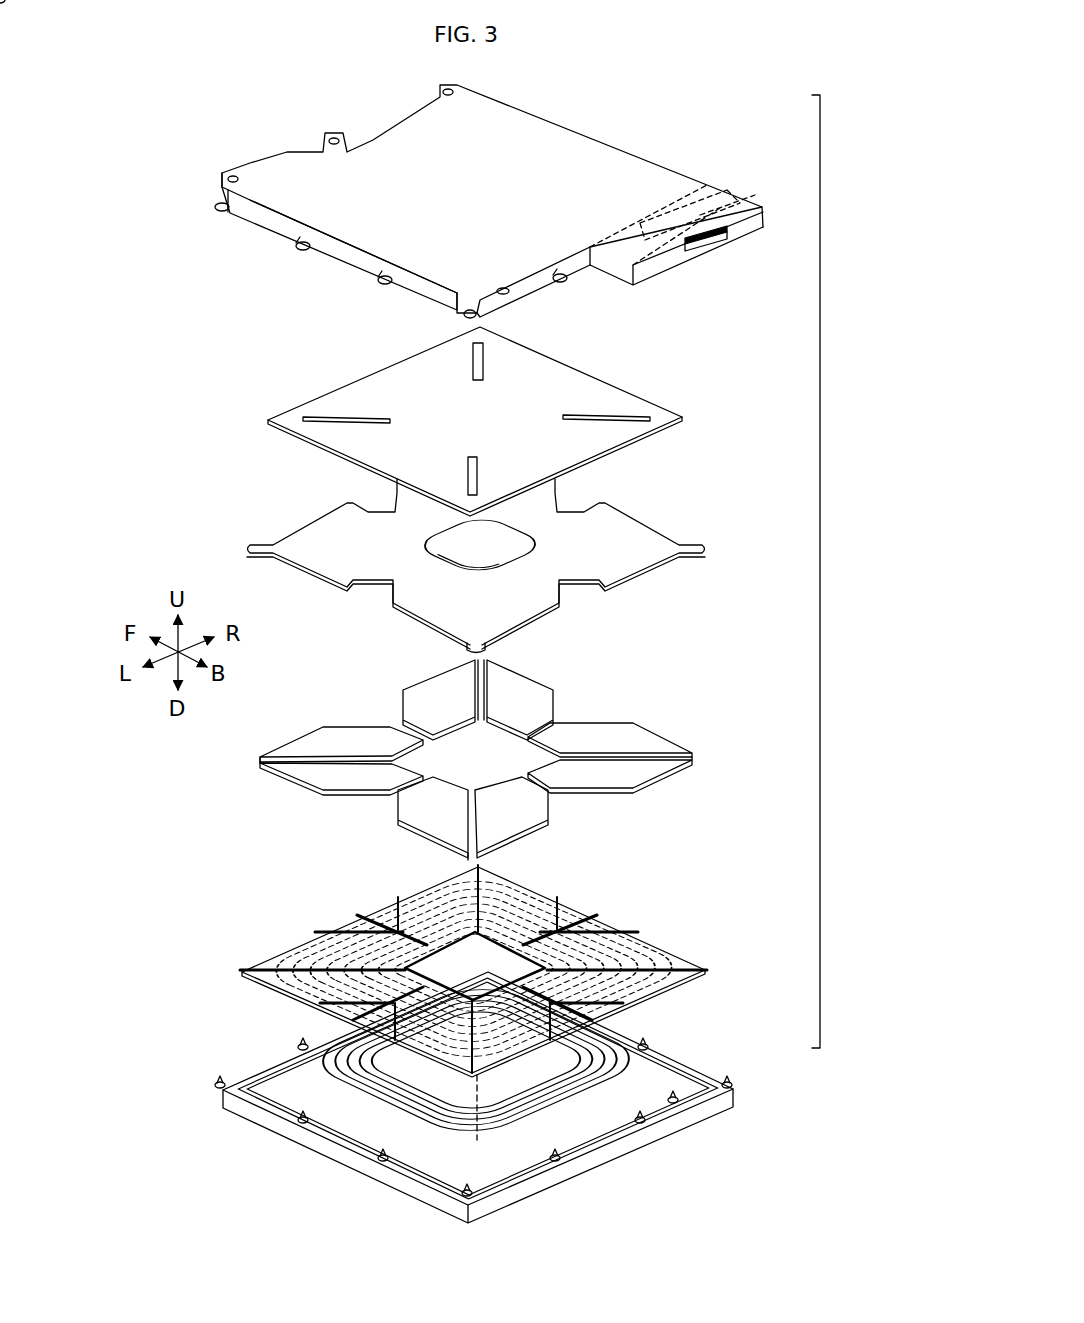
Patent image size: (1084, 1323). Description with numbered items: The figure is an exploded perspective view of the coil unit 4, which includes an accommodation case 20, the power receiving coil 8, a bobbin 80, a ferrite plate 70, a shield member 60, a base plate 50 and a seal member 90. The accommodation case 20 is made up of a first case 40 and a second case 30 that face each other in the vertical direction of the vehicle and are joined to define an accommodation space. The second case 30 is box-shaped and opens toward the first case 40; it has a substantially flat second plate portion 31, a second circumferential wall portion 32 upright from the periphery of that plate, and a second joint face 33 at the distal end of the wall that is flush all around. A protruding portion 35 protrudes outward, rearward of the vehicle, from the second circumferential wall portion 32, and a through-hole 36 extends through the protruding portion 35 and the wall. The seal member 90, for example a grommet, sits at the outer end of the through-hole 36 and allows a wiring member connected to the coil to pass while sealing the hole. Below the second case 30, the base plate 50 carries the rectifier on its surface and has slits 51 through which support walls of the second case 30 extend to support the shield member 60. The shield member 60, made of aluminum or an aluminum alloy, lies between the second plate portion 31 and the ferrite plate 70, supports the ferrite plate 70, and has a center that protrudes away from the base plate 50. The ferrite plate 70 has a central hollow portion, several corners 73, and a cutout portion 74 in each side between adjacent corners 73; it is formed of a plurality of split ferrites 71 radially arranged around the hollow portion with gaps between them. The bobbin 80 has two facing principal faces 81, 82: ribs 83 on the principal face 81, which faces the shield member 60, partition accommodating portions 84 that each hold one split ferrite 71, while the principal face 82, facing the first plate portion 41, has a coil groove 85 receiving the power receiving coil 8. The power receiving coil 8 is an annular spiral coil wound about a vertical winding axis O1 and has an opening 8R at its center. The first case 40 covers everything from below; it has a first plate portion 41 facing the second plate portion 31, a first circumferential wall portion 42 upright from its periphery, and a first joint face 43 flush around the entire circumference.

The coil unit 4 is at (703, 82).
The accommodation case 20 is at (820, 575).
The second case 30 is at (648, 142).
The second plate portion 31 is at (604, 153).
The second circumferential wall portion 32 is at (277, 218).
The second joint face 33 is at (358, 270).
The protruding portion 35 is at (627, 248).
The through-hole 36 is at (668, 248).
The seal member 90 is at (722, 243).
The base plate 50 is at (650, 381).
The slits 51 is at (600, 410).
The shield member 60 is at (670, 520).
The ferrite plate 70 is at (705, 808).
The split ferrites 71 is at (648, 716).
The corners 73 is at (486, 651).
The cutout portion 74 is at (370, 705).
The bobbin 80 is at (585, 897).
The principal face 81 is at (672, 978).
The principal face 82 is at (660, 998).
The ribs 83 is at (672, 966).
The accommodating portions 84 is at (340, 955).
The coil groove 85 is at (292, 1001).
The first case 40 is at (703, 1067).
The first plate portion 41 is at (492, 1163).
The first circumferential wall portion 42 is at (503, 1198).
The first joint face 43 is at (680, 1100).
The power receiving coil 8 is at (397, 1072).
The opening 8R is at (380, 1068).
The winding axis O1 is at (483, 1092).